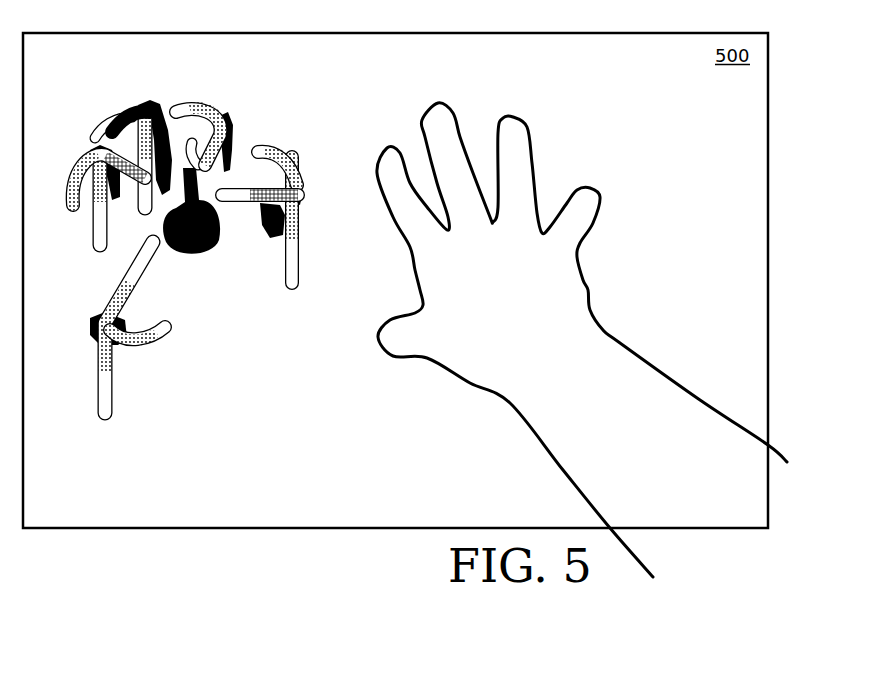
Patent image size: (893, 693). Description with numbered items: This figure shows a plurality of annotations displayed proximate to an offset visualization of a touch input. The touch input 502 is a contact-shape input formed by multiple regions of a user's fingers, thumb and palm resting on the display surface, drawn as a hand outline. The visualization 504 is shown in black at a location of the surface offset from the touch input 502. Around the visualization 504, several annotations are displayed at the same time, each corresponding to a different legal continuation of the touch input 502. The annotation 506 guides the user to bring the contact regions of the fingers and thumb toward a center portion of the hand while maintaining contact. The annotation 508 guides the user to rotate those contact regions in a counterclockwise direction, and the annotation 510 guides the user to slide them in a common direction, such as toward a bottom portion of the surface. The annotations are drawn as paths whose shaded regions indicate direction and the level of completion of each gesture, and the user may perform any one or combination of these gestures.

The touch input 502 is at (590, 293).
The visualization 504 is at (213, 252).
The annotation 506 is at (153, 112).
The annotation 508 is at (130, 110).
The annotation 510 is at (120, 150).